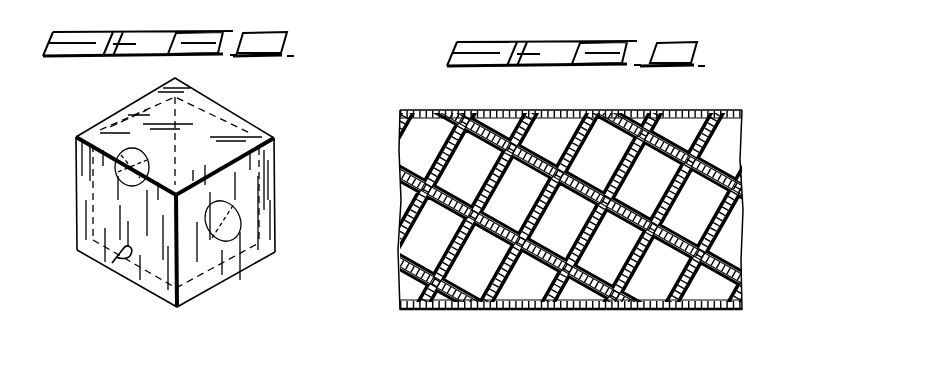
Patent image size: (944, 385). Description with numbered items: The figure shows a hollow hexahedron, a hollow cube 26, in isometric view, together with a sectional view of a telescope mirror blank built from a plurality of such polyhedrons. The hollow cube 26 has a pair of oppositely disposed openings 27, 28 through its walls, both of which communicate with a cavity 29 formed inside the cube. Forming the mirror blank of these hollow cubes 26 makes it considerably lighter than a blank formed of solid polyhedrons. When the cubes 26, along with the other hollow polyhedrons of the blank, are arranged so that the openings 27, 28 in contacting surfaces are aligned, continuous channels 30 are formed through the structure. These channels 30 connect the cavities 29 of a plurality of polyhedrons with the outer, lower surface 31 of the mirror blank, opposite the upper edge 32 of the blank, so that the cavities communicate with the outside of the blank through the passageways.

In FIG. 8, the hollow cube 26 is at (245, 120).
In FIG. 9, the hollow cube 26 is at (523, 207).
In FIG. 8, the opening 27 is at (196, 231).
In FIG. 8, the opening 28 is at (150, 167).
In FIG. 8, the cavity 29 is at (85, 275).
In FIG. 9, the continuous channels 30 is at (480, 172).
In FIG. 9, the outer, lower surface 31 is at (670, 310).
In FIG. 9, the top edge member 32 is at (718, 110).